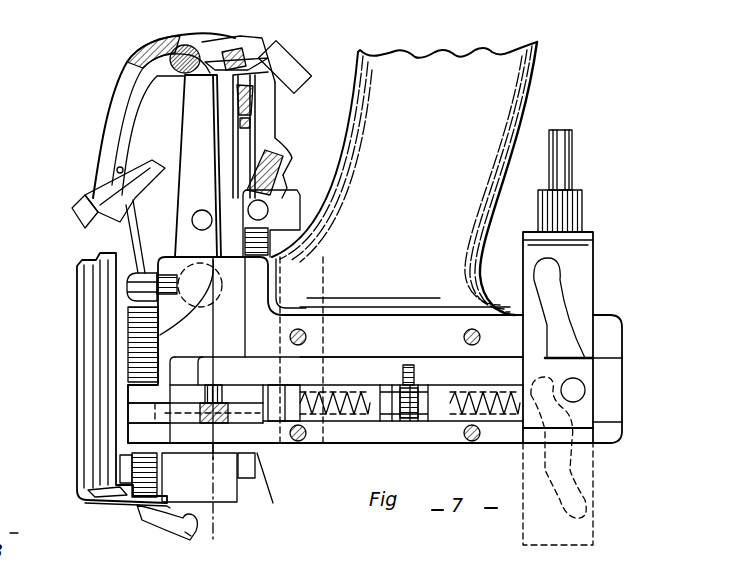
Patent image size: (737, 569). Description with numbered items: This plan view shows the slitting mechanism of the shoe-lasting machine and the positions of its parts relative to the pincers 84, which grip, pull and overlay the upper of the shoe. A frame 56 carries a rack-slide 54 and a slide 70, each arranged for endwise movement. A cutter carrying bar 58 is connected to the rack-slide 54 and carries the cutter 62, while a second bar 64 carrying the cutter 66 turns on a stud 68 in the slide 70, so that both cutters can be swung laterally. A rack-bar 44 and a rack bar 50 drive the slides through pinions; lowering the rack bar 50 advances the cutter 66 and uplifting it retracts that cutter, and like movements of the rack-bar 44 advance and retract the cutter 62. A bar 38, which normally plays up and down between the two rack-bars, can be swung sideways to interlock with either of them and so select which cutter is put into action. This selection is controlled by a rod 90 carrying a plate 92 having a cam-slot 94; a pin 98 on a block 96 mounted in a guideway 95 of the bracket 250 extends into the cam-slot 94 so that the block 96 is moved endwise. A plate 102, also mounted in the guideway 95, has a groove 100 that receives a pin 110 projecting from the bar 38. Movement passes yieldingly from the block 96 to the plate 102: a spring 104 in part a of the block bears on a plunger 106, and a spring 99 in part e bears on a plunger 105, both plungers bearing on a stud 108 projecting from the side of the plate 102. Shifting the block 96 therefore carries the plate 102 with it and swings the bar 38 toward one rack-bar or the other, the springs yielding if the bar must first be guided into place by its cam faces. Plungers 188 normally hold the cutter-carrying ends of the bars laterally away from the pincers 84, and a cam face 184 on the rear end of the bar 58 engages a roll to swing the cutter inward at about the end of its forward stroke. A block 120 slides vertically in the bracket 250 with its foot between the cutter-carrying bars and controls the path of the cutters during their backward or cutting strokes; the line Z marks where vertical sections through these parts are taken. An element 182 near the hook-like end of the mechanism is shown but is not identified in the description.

The bar 38 is at (217, 447).
The rack-bar 44 is at (143, 412).
The rack bar 50 is at (247, 455).
The rack-slide 54 is at (125, 487).
The frame 56 is at (90, 350).
The cutter carrying bar 58 is at (93, 193).
The cutter 62 is at (77, 222).
The bar 64 is at (268, 106).
The cutter 66 is at (237, 45).
The stud 68 is at (258, 210).
The slide 70 is at (298, 190).
The pincers 84 is at (167, 68).
The rod 90 is at (572, 165).
The plate 92 is at (590, 247).
The cam-slot 94 is at (570, 303).
The guideway 95 is at (608, 378).
The block 96 is at (293, 393).
The pin 98 is at (577, 390).
The spring 99 is at (360, 412).
The groove 100 is at (211, 386).
The plate 102 is at (411, 368).
The spring 104 is at (487, 413).
The plunger 105 is at (393, 413).
The plunger 106 is at (425, 393).
The stud 108 is at (410, 365).
The pin 110 is at (208, 387).
The block 120 is at (199, 477).
The hook arm 182 is at (163, 528).
The cam face 184 is at (190, 538).
The plungers 188 is at (243, 192).
The bracket 250 is at (404, 178).
The part of block 96 a is at (450, 418).
The part of block 96 e is at (367, 417).
The section line z—z Z is at (190, 393).